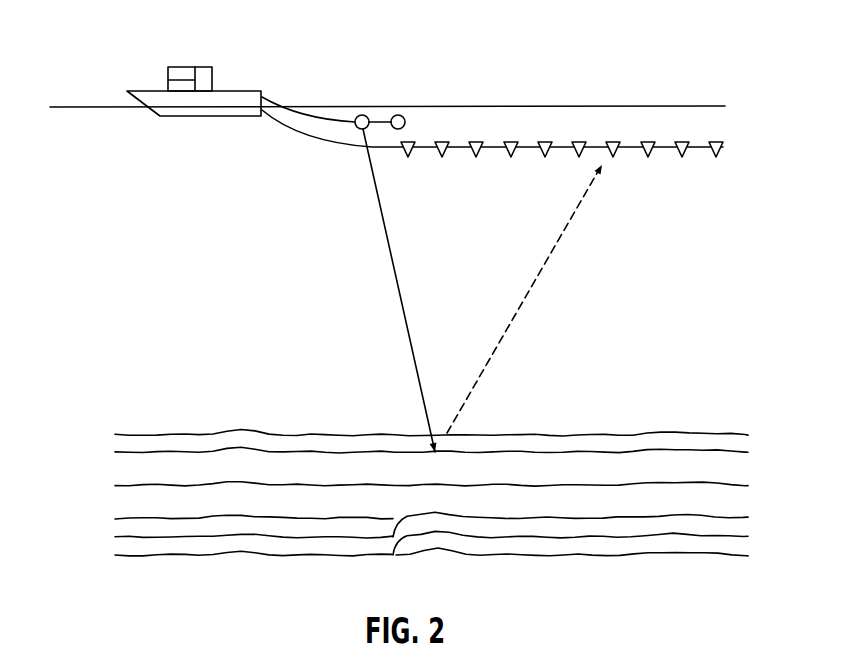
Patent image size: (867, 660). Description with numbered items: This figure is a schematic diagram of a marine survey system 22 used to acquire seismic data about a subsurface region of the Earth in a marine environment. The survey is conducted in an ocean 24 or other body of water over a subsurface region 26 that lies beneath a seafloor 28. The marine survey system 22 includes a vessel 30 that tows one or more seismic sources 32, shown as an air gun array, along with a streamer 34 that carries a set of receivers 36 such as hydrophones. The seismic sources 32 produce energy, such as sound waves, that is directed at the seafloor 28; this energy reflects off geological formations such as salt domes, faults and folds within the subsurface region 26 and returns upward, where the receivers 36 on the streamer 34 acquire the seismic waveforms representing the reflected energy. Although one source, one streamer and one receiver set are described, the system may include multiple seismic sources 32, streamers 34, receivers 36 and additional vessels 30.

The marine survey system 22 is at (156, 64).
The ocean 24 is at (367, 282).
The subsurface region 26 is at (98, 425).
The seafloor 28 is at (240, 429).
The vessel 30 is at (203, 67).
The seismic source 32 is at (360, 114).
The streamer 34 is at (742, 113).
The receiver 36 is at (443, 141).